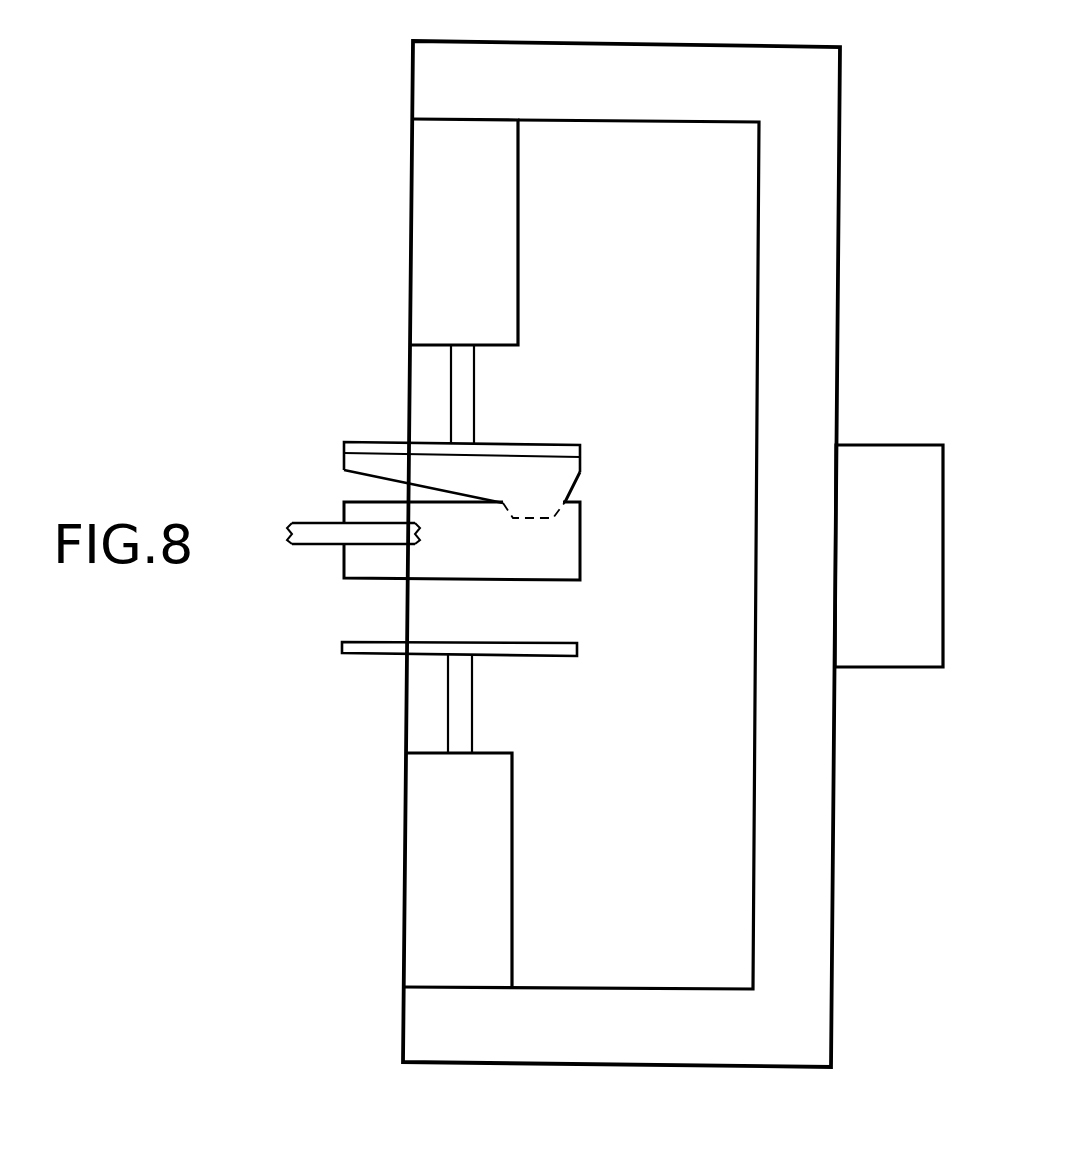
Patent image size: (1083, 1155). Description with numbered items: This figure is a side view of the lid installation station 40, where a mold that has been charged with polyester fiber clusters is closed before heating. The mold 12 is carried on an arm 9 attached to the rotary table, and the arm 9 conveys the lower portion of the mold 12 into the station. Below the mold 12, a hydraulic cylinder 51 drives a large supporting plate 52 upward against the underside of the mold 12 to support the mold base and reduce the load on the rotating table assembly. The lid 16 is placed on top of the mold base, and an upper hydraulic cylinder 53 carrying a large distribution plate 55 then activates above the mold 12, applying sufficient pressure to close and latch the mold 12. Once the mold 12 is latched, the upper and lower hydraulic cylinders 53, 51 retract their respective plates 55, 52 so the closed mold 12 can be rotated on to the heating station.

The lid installation station 40 is at (300, 239).
The hydraulic cylinder 53 is at (519, 206).
The hydraulic cylinder 51 is at (512, 873).
The distribution plate 55 is at (550, 444).
The lid 16 is at (580, 473).
The mold 12 is at (580, 540).
The arm 9 is at (318, 523).
The supporting plate 52 is at (577, 657).